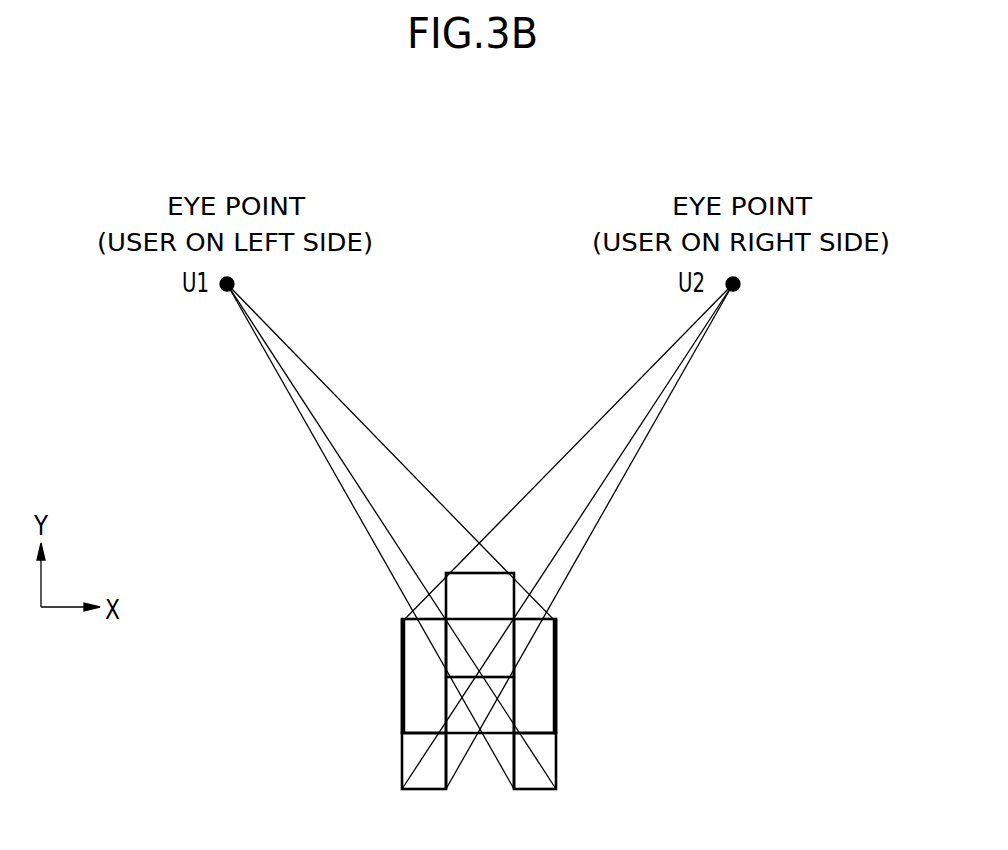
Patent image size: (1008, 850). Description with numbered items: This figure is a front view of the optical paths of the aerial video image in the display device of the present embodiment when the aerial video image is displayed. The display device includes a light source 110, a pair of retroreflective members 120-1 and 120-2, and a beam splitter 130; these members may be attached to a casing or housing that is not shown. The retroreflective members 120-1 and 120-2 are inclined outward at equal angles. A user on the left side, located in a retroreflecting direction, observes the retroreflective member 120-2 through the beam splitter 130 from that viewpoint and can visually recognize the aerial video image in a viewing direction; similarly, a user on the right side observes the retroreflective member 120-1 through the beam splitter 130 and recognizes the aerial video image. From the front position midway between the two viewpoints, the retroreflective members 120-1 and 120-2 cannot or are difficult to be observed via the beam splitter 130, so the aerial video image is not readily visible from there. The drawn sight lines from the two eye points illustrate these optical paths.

The light source 110 is at (515, 594).
The retroreflective member 120-1 is at (402, 706).
The retroreflective member 120-2 is at (558, 700).
The beam splitter 130 is at (471, 745).